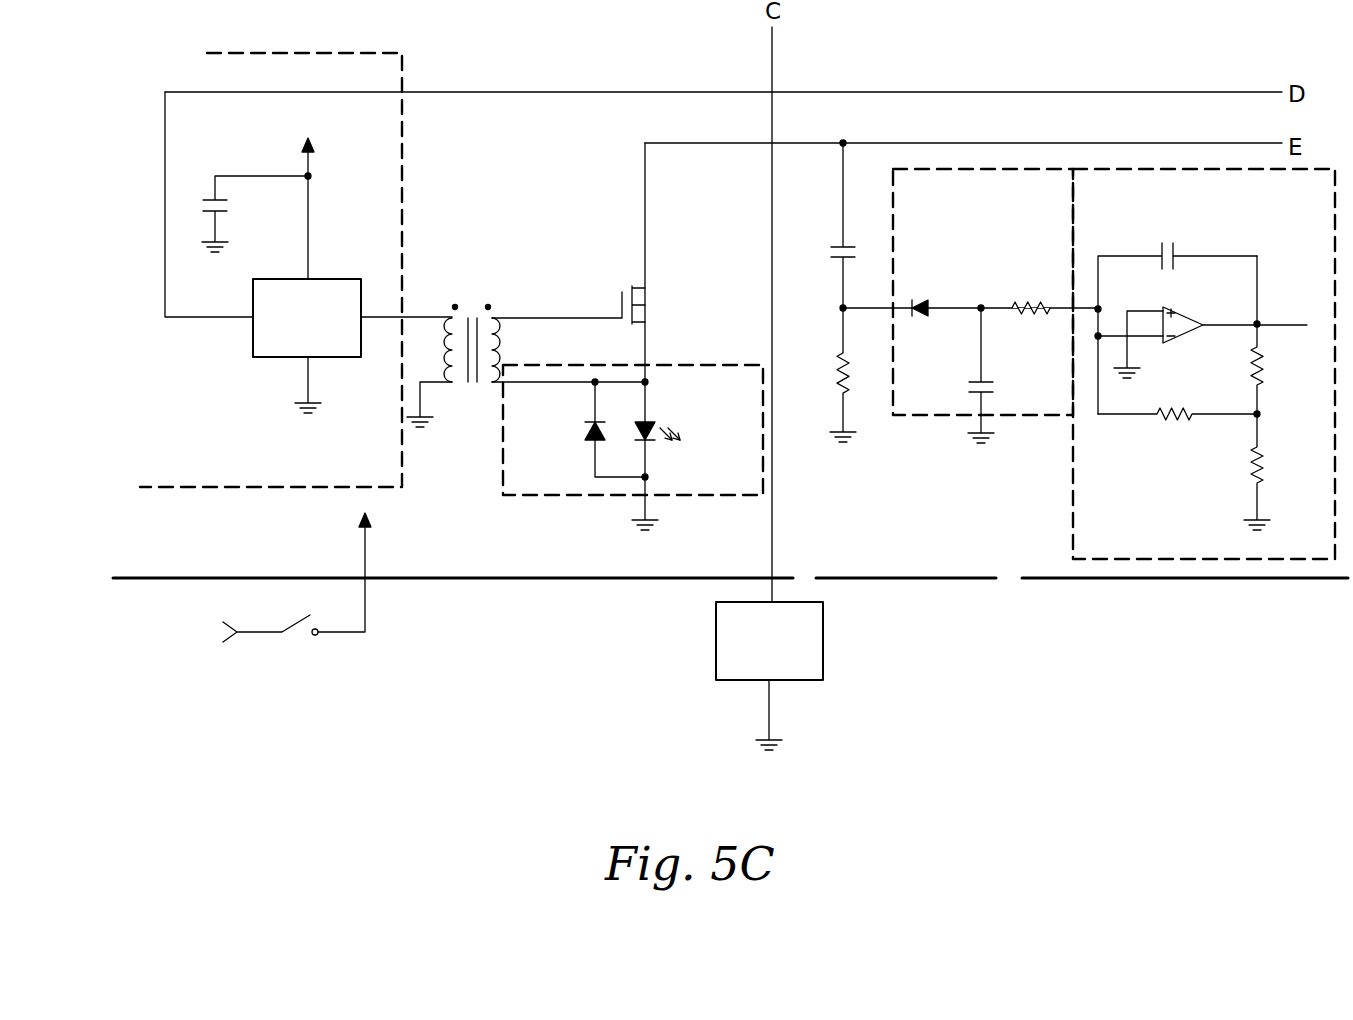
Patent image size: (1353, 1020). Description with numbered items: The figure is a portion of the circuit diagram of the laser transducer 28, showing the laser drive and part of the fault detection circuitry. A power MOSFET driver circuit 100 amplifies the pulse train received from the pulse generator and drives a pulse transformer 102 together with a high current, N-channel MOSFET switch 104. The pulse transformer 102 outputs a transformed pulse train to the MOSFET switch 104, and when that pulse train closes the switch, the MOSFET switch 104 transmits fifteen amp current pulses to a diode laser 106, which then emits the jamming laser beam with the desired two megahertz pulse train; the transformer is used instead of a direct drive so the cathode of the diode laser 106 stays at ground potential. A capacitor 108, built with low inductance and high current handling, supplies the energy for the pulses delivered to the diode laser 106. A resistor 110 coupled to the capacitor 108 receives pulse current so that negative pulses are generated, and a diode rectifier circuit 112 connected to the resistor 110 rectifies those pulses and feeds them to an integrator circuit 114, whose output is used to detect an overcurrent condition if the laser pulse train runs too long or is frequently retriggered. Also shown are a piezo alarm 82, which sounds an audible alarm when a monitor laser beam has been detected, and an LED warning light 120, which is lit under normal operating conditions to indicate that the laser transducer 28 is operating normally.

The power MOSFET driver circuit 100 is at (313, 58).
The pulse transformer 102 is at (455, 306).
The N-channel MOSFET switch 104 is at (635, 287).
The diode laser 106 is at (552, 487).
The capacitor 108 is at (839, 249).
The resistor 110 is at (840, 372).
The diode rectifier circuit 112 is at (961, 172).
The integrator circuit 114 is at (1172, 168).
The LED warning light 120 is at (345, 633).
The piezo alarm 82 is at (815, 637).
The laser transducer 28 is at (458, 709).